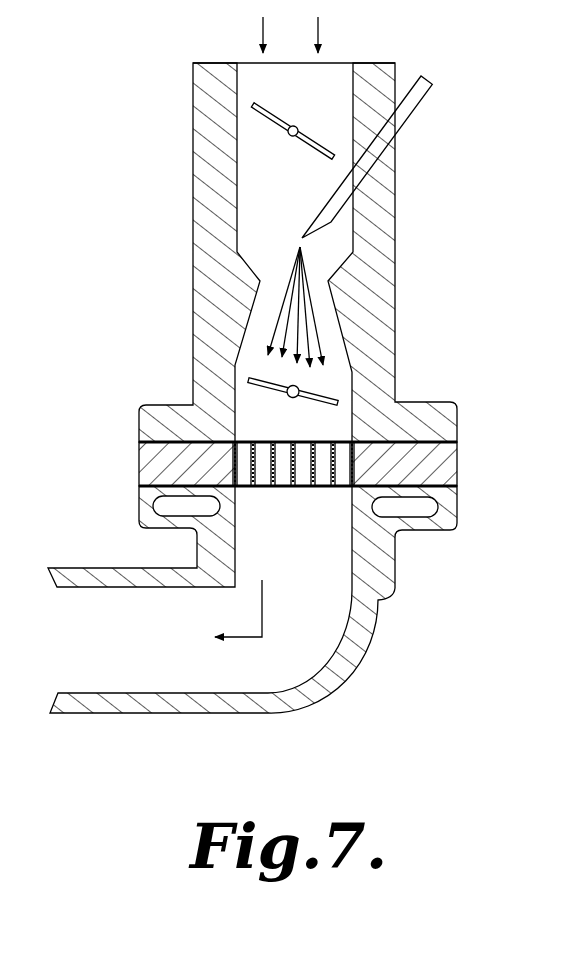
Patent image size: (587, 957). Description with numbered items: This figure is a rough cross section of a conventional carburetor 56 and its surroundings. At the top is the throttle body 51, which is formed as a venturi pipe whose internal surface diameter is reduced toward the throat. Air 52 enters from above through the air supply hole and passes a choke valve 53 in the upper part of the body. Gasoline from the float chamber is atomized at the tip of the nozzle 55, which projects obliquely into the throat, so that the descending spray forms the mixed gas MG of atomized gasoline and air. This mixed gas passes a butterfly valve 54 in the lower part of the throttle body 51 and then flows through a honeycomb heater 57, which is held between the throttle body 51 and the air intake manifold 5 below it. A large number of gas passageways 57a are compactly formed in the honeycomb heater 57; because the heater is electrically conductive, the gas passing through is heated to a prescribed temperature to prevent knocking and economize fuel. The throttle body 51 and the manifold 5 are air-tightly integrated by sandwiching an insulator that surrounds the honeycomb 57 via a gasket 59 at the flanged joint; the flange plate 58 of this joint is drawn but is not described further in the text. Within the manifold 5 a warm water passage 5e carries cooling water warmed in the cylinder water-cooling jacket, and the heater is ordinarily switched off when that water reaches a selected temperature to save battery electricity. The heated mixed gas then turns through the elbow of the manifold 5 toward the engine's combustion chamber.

The air intake manifold 5 is at (100, 580).
The warm water passage 5e is at (160, 508).
The throttle body 51 is at (202, 345).
The air 52 is at (317, 36).
The choke valve 53 is at (317, 147).
The butterfly valve 54 is at (263, 384).
The nozzle 55 is at (410, 110).
The carburetor 56 is at (410, 258).
The honeycomb heater 57 is at (198, 396).
The gas passageways 57a is at (301, 488).
The flange plate 58 is at (150, 463).
The gasket 59 is at (142, 430).
The mixed gas MG is at (283, 297).